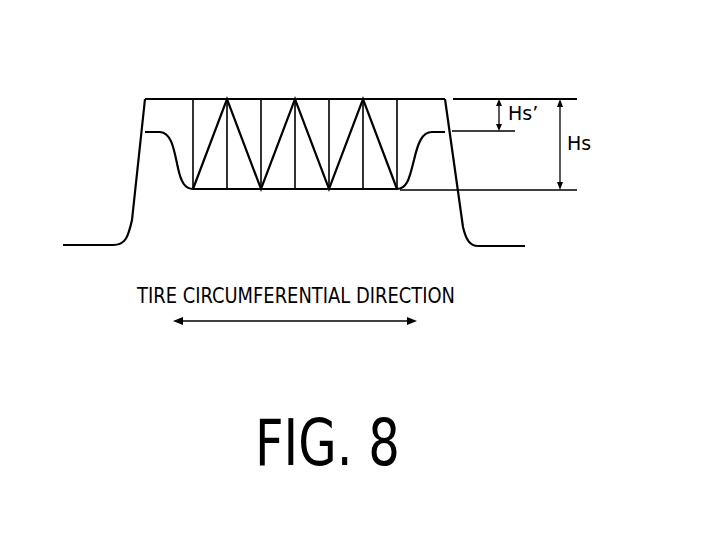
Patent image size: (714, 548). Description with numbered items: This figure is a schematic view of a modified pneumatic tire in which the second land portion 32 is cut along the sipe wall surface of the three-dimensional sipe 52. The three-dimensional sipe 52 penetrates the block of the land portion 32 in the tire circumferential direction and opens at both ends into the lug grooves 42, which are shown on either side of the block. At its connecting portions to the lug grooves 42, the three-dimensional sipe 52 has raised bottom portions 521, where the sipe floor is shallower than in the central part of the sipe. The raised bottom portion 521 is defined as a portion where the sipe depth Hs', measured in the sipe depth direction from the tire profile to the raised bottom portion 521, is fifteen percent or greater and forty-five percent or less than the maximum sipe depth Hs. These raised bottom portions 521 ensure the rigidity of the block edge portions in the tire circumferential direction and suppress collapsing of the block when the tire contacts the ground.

The second land portion 32 is at (462, 62).
The lug grooves 42 is at (108, 182).
The three-dimensional sipe 52 is at (342, 95).
The raised bottom portions 521 is at (153, 132).